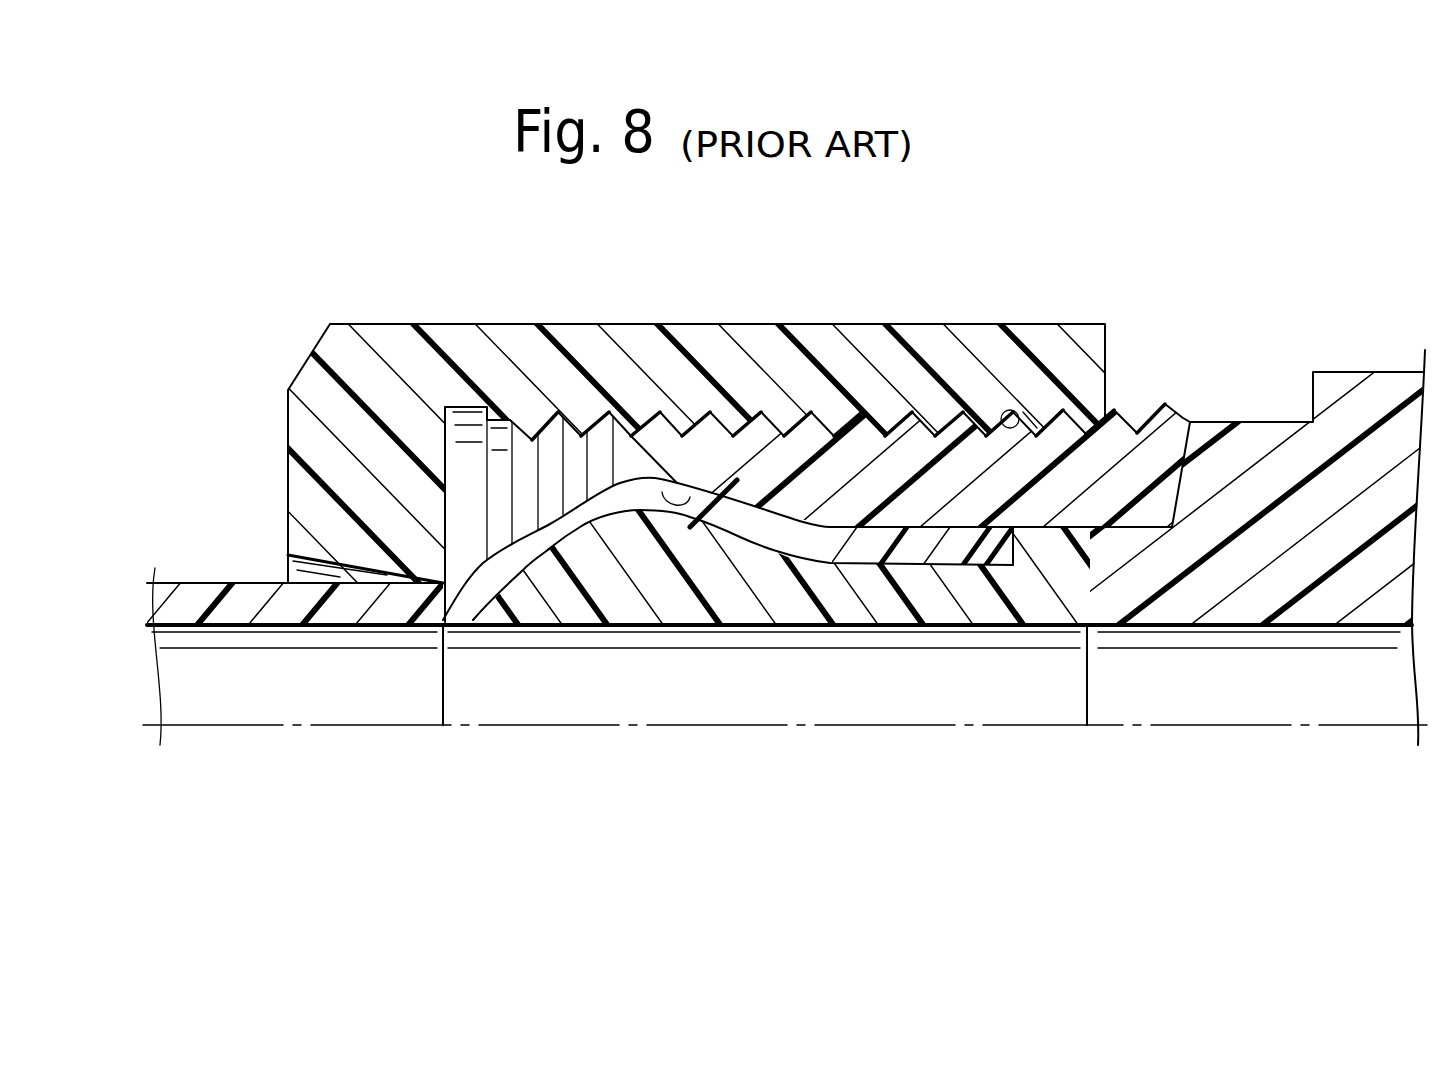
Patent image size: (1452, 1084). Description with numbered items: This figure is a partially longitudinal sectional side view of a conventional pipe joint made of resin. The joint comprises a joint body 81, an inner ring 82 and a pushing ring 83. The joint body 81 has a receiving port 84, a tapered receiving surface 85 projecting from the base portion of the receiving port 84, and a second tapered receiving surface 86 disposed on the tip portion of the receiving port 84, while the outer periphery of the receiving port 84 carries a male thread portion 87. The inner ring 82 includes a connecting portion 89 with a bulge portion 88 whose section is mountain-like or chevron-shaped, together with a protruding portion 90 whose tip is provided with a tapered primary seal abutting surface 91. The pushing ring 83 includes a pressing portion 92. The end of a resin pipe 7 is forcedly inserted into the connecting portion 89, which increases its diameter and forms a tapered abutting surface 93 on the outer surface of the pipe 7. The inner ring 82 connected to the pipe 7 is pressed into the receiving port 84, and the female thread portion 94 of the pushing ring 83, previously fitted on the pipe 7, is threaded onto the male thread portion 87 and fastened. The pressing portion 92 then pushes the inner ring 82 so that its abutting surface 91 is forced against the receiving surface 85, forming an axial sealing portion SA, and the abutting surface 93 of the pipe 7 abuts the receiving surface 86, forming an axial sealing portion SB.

The pipe 7 is at (191, 579).
The joint body 81 is at (1347, 368).
The inner ring 82 is at (436, 674).
The pushing ring 83 is at (381, 322).
The receiving port 84 is at (802, 505).
The tapered receiving surface 85 is at (1083, 578).
The tapered receiving surface 86 is at (650, 478).
The male thread portion 87 is at (893, 420).
The bulge portion 88 is at (620, 537).
The connecting portion 89 is at (893, 608).
The protruding portion 90 is at (1075, 530).
The abutting surface 91 is at (1138, 580).
The pressing portion 92 is at (423, 557).
The tapered abutting surface 93 is at (740, 500).
The female thread portion 94 is at (1015, 420).
The axial sealing portion SA is at (1172, 546).
The axial sealing portion SB is at (805, 430).